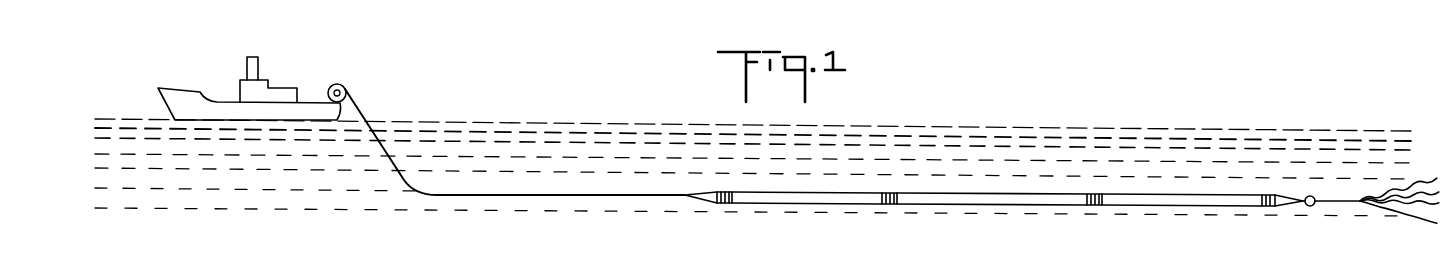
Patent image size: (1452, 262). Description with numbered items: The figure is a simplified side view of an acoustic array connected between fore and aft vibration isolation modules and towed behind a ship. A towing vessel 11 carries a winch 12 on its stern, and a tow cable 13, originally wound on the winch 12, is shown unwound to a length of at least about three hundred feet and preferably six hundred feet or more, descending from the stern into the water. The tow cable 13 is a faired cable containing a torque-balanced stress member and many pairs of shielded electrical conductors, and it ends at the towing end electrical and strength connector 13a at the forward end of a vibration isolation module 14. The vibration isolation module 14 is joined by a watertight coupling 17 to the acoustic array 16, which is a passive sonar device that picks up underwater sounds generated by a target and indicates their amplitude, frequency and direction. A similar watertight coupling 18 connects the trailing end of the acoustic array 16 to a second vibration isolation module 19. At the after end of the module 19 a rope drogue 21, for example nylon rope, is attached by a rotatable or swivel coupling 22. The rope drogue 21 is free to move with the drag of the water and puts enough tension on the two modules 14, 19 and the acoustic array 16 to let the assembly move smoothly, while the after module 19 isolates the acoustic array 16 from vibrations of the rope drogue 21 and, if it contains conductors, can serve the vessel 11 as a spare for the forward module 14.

The towing vessel 11 is at (310, 102).
The winch 12 is at (345, 88).
The tow cable 13 is at (362, 116).
The towing end electrical and strength connector 13a is at (710, 205).
The vibration isolation module 14 is at (795, 199).
The acoustic array 16 is at (998, 206).
The watertight coupling 17 is at (888, 205).
The watertight coupling 18 is at (1093, 205).
The second vibration isolation module 19 is at (1172, 206).
The rope drogue 21 is at (1406, 225).
The swivel coupling 22 is at (1312, 207).